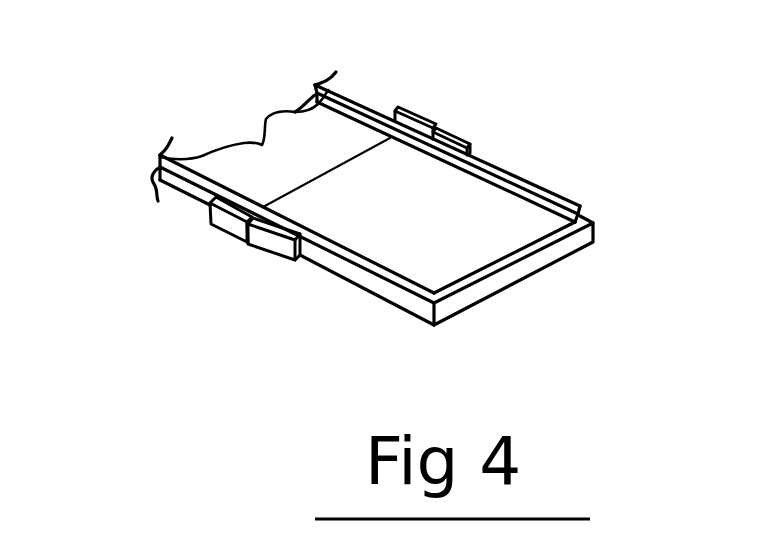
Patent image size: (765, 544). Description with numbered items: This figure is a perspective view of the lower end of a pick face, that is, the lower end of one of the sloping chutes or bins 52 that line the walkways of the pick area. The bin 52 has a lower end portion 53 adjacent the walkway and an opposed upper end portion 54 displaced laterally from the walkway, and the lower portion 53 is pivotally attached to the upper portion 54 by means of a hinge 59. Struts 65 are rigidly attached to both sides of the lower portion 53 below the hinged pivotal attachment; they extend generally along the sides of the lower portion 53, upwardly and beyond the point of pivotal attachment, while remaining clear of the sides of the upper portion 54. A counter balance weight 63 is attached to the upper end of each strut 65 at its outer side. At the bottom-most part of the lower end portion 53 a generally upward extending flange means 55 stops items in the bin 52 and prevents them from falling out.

The bin 52 is at (375, 190).
The lower end portion 53 is at (523, 233).
The upper end portion 54 is at (262, 145).
The flange means 55 is at (532, 268).
The hinge 59 is at (258, 264).
The counter balance weight 63 is at (222, 225).
The strut 65 is at (278, 244).